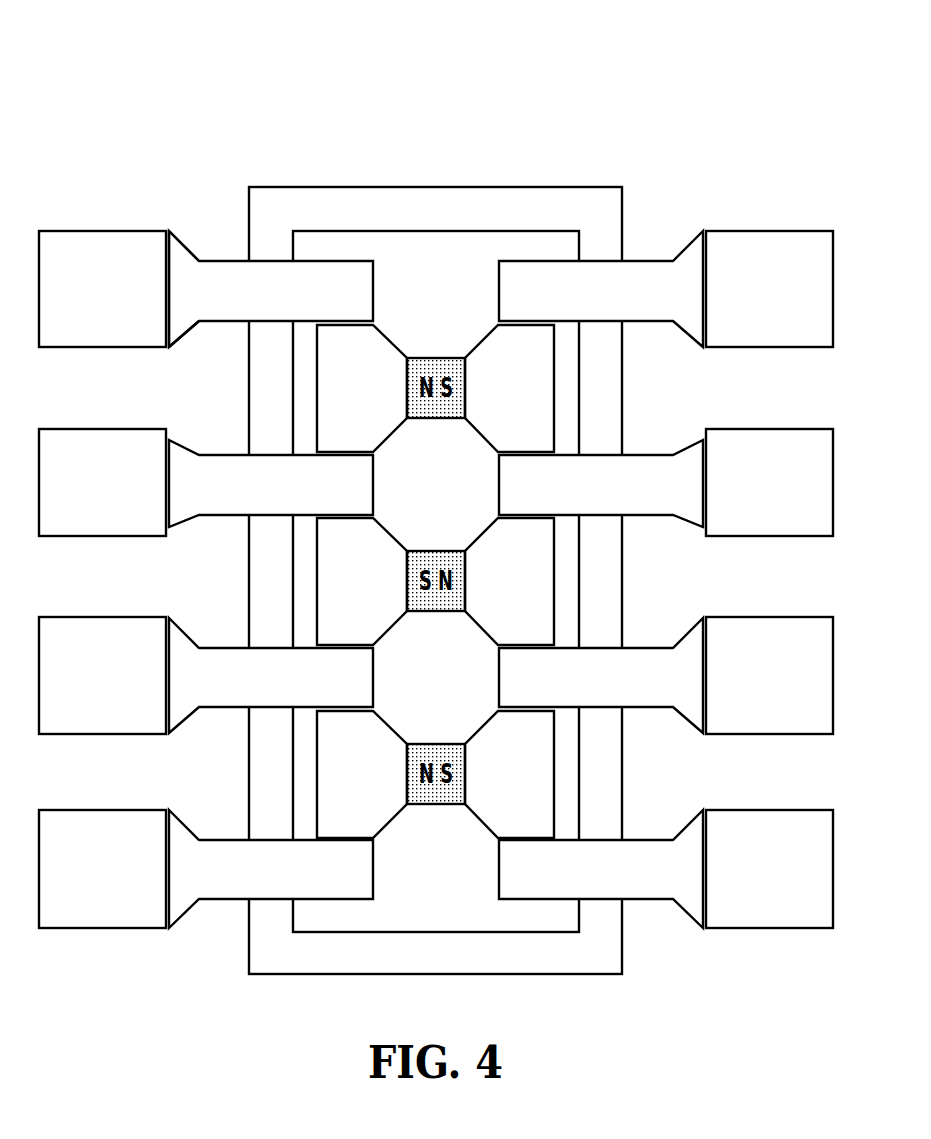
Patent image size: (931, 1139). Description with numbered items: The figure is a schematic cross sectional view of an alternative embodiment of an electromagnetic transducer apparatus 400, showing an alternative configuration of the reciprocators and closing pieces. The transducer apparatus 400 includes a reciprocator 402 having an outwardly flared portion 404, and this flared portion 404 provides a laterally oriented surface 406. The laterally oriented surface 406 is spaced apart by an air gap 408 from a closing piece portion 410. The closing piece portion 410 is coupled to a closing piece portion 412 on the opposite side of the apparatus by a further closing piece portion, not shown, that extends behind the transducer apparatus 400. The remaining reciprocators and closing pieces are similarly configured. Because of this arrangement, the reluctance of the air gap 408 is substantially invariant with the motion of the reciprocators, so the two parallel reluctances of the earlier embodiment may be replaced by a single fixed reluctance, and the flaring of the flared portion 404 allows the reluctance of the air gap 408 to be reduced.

The transducer apparatus 400 is at (188, 83).
The reciprocator 402 is at (218, 303).
The outwardly flared portion 404 is at (183, 244).
The laterally oriented surface 406 is at (165, 342).
The air gap 408 is at (168, 231).
The closing piece portion 410 is at (102, 230).
The closing piece portion 412 is at (768, 230).